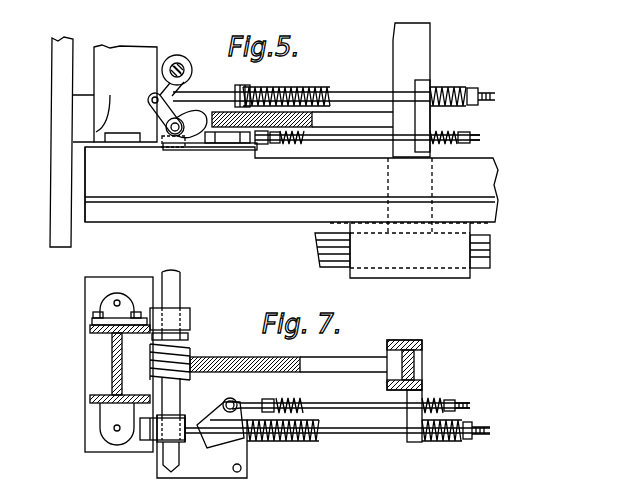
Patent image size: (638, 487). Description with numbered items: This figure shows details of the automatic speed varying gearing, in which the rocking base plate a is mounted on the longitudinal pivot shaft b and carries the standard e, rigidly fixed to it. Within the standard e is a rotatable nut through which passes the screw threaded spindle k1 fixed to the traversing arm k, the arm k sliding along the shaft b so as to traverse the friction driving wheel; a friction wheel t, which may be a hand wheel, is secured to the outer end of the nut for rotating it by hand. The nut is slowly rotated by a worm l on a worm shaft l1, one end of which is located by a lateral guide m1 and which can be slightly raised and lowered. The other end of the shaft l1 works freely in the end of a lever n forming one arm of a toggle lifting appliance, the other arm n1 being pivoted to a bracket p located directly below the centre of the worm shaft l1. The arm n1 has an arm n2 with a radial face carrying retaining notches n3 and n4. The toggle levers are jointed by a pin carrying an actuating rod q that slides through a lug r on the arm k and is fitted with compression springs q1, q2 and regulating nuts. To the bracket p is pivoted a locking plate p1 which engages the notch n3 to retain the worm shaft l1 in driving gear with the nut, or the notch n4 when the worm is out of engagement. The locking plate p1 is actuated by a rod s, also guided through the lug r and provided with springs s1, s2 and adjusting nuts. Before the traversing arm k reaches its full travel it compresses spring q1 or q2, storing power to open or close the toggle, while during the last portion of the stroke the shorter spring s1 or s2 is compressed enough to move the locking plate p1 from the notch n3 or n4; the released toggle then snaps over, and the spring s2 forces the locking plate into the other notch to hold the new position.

In FIG. 5, the friction wheel t is at (72, 142).
In FIG. 5, the standard e is at (125, 93).
In FIG. 7, the standard e is at (119, 364).
In FIG. 5, the rocking base plate a is at (291, 184).
In FIG. 5, the bracket p is at (129, 184).
In FIG. 7, the bracket p is at (202, 449).
In FIG. 7, the locking plate p1 is at (248, 436).
In FIG. 5, the worm l is at (183, 78).
In FIG. 7, the worm l is at (189, 348).
In FIG. 5, the worm shaft l1 is at (186, 60).
In FIG. 7, the worm shaft l1 is at (181, 290).
In FIG. 7, the lateral guide m1 is at (191, 316).
In FIG. 5, the lever n is at (150, 80).
In FIG. 7, the lever n is at (152, 442).
In FIG. 5, the toggle arm n1 is at (150, 104).
In FIG. 5, the arm n2 is at (192, 138).
In FIG. 7, the arm n2 is at (190, 420).
In FIG. 5, the retaining notch n3 is at (228, 147).
In FIG. 5, the retaining notch n4 is at (208, 116).
In FIG. 5, the actuating rod q is at (356, 88).
In FIG. 7, the actuating rod q is at (358, 437).
In FIG. 5, the compression spring q1 is at (311, 85).
In FIG. 7, the compression spring q1 is at (300, 440).
In FIG. 5, the compression spring q2 is at (458, 84).
In FIG. 7, the compression spring q2 is at (446, 440).
In FIG. 5, the traversing arm k is at (398, 36).
In FIG. 7, the traversing arm k is at (422, 352).
In FIG. 5, the screw threaded spindle k1 is at (384, 133).
In FIG. 7, the screw threaded spindle k1 is at (250, 356).
In FIG. 5, the lug r is at (431, 115).
In FIG. 7, the lug r is at (407, 418).
In FIG. 5, the rod s is at (367, 143).
In FIG. 7, the rod s is at (366, 404).
In FIG. 5, the spring s1 is at (303, 140).
In FIG. 7, the spring s1 is at (303, 404).
In FIG. 5, the spring s2 is at (455, 125).
In FIG. 7, the spring s2 is at (441, 400).
In FIG. 5, the longitudinal pivot shaft b is at (318, 247).